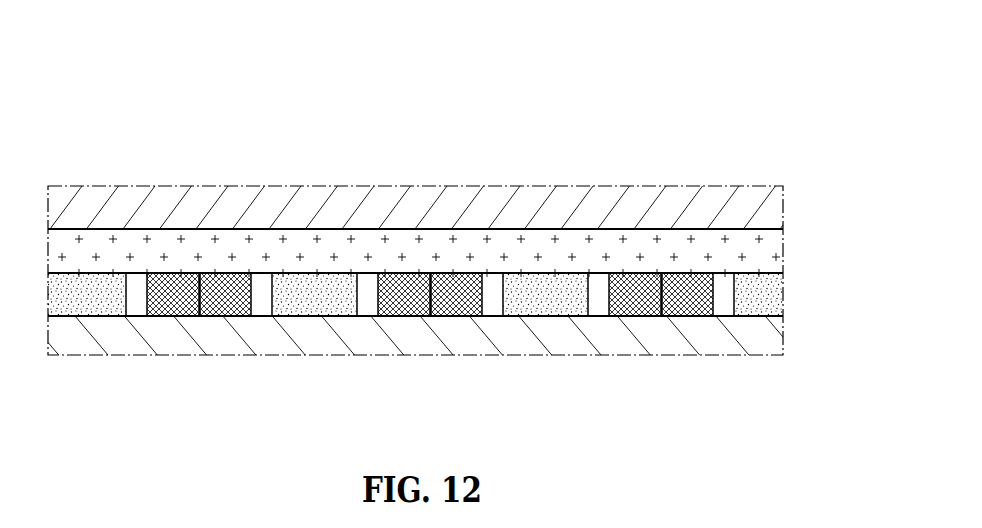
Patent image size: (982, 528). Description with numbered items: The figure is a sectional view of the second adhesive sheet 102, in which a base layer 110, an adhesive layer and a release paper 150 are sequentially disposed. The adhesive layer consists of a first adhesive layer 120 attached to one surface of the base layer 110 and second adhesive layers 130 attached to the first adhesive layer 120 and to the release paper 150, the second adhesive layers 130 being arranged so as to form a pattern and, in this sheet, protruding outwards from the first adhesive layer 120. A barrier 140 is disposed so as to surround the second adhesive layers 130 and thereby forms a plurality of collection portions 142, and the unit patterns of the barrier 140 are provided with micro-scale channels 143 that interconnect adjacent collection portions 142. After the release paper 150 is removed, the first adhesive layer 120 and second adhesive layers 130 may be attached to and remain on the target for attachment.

The second adhesive sheet 102 is at (737, 115).
The base layer 110 is at (217, 200).
The first adhesive layer 120 is at (345, 252).
The second adhesive layers 130 is at (557, 292).
The barrier 140 is at (170, 303).
The collection portions 142 is at (367, 298).
The micro-scale channels 143 is at (203, 303).
The release paper 150 is at (597, 338).